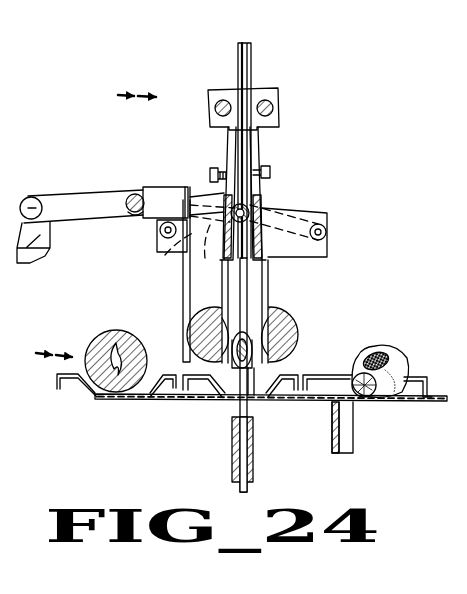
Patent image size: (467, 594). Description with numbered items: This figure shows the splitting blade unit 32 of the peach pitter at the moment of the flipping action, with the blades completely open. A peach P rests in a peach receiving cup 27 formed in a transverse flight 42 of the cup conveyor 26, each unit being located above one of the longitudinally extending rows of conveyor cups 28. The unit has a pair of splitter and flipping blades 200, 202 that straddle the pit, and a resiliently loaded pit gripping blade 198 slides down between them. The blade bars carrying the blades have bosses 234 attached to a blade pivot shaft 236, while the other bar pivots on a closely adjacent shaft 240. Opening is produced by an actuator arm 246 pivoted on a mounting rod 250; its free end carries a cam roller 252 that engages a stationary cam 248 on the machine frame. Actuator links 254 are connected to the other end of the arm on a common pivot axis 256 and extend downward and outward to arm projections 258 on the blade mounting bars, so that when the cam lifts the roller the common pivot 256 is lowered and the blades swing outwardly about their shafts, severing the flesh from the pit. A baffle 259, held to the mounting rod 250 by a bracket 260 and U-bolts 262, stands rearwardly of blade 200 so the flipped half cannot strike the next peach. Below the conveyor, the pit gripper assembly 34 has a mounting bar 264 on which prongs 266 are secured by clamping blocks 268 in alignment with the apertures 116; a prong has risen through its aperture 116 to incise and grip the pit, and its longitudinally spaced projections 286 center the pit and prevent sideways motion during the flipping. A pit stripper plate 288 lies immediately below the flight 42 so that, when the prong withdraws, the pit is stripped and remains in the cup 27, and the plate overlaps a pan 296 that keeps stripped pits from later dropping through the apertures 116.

The cup conveyor 26 is at (323, 371).
The peach receiving cup 27 is at (95, 393).
The longitudinally extending rows of conveyor cups 28 is at (279, 156).
The splitting blade unit 32 is at (287, 271).
The pit gripper assembly 34 is at (229, 446).
The conveyor flight 42 is at (56, 380).
The aperture 116 is at (253, 397).
The pit gripping blade 198 is at (245, 296).
The splitter and flipping blade 200 is at (219, 303).
The splitter and flipping blade 202 is at (274, 318).
The boss 234 is at (262, 92).
The blade pivot shaft 236 is at (273, 104).
The shaft 240 is at (216, 103).
The actuator arm 246 is at (98, 198).
The stationary cam 248 is at (40, 238).
The mounting rod 250 is at (133, 196).
The cam roller 252 is at (36, 210).
The actuator link 254 is at (292, 213).
The common pivot axis 256 is at (276, 197).
The arm projection 258 is at (330, 250).
The baffle 259 is at (185, 345).
The bracket 260 is at (165, 190).
The U-bolt 262 is at (130, 211).
The mounting bar 264 is at (256, 472).
The prong 266 is at (237, 377).
The clamping block 268 is at (231, 468).
The projection 286 is at (254, 348).
The pit stripper plate 288 is at (212, 384).
The pan 296 is at (418, 404).
The peach P is at (98, 330).